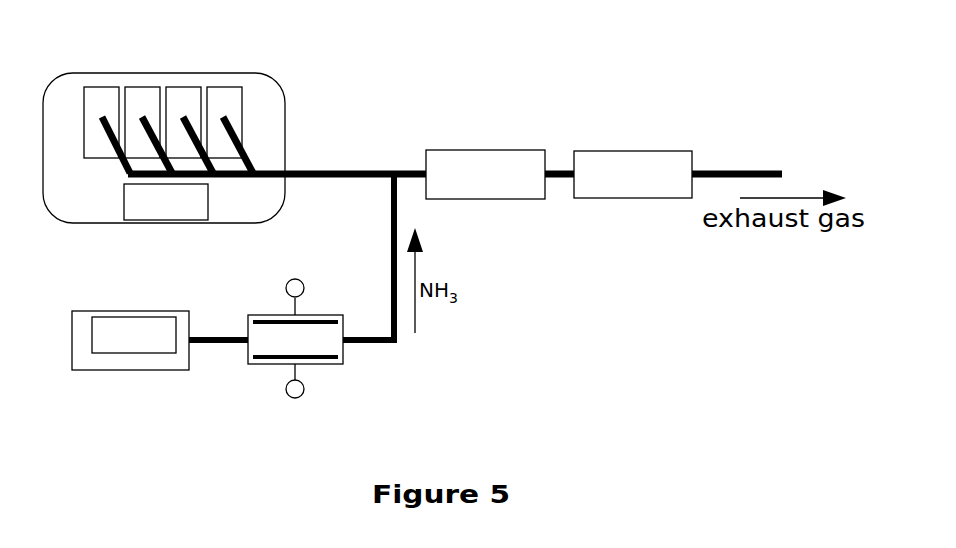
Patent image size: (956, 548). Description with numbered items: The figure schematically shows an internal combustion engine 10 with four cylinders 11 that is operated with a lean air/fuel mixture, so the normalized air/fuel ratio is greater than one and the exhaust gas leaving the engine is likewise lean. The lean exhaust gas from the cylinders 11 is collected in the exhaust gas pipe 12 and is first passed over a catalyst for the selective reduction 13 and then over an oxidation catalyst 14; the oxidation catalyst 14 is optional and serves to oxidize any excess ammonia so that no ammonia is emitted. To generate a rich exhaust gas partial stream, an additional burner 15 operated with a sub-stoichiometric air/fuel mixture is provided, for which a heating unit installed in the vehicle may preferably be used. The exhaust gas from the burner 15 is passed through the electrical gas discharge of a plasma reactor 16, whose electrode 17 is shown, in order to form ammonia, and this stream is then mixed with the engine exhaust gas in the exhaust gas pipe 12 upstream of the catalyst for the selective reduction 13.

The internal combustion engine 10 is at (273, 105).
The cylinders 11 is at (103, 93).
The exhaust gas pipe 12 is at (308, 170).
The catalyst for the selective reduction 13 is at (465, 150).
The oxidation catalyst 14 is at (620, 151).
The burner 15 is at (127, 362).
The plasma reactor 16 is at (343, 355).
The electrode 17 is at (272, 320).